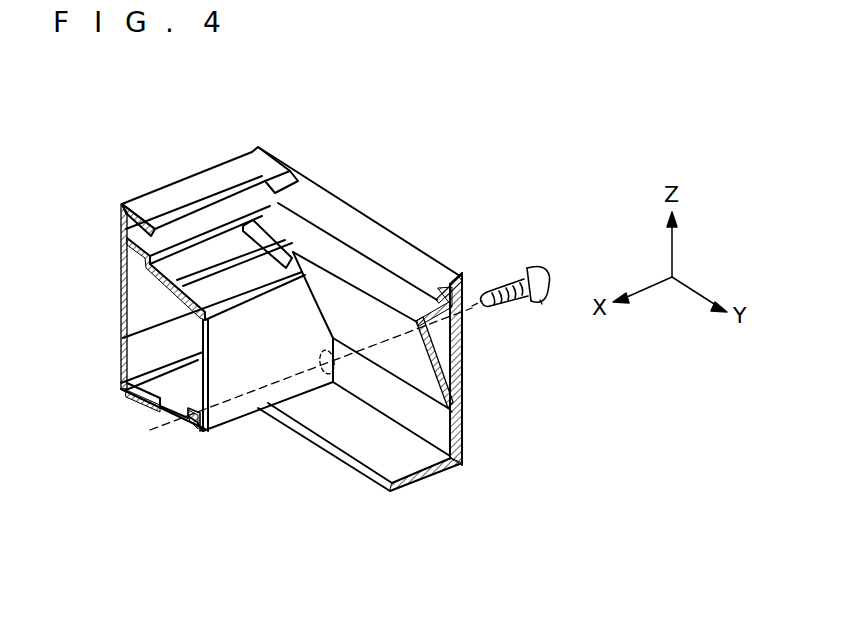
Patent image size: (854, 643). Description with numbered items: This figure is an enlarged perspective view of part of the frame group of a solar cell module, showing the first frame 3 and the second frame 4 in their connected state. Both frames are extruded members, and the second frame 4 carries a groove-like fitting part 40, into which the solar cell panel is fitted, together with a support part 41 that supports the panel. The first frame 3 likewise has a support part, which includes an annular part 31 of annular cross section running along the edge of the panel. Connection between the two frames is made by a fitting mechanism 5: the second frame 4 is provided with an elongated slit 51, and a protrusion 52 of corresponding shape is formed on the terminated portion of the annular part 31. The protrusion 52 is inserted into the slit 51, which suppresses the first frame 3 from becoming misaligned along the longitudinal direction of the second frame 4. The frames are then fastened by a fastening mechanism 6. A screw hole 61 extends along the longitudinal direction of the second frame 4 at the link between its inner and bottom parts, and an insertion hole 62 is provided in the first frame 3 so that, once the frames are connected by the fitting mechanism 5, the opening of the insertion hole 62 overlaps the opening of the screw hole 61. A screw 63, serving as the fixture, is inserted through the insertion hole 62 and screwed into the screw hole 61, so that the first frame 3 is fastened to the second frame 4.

The first frame 3 is at (385, 238).
The annular part 31 is at (417, 363).
The second frame 4 is at (184, 188).
The fitting part 40 is at (121, 223).
The support part 41 is at (121, 312).
The fitting mechanism 5 is at (307, 192).
The slit 51 is at (540, 273).
The protrusion 52 is at (275, 243).
The fastening mechanism 6 is at (348, 443).
The screw hole 61 is at (200, 425).
The insertion hole 62 is at (322, 372).
The screw 63 is at (544, 303).